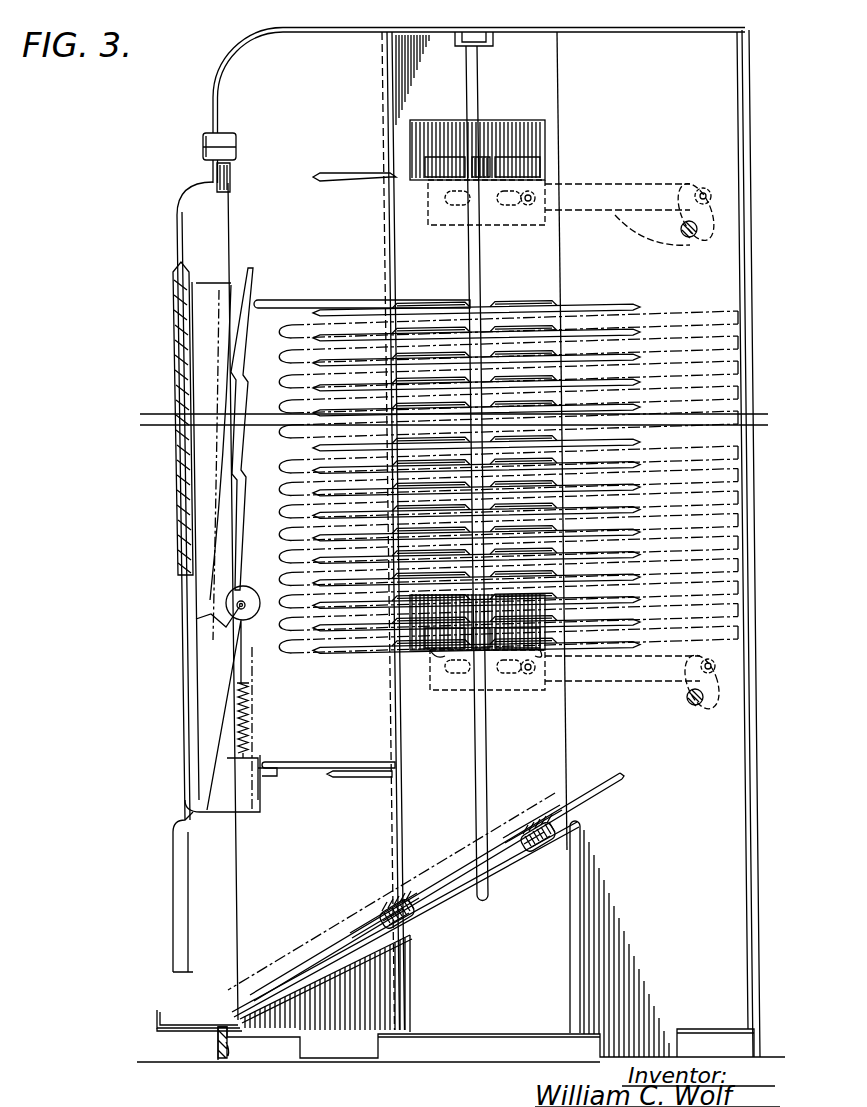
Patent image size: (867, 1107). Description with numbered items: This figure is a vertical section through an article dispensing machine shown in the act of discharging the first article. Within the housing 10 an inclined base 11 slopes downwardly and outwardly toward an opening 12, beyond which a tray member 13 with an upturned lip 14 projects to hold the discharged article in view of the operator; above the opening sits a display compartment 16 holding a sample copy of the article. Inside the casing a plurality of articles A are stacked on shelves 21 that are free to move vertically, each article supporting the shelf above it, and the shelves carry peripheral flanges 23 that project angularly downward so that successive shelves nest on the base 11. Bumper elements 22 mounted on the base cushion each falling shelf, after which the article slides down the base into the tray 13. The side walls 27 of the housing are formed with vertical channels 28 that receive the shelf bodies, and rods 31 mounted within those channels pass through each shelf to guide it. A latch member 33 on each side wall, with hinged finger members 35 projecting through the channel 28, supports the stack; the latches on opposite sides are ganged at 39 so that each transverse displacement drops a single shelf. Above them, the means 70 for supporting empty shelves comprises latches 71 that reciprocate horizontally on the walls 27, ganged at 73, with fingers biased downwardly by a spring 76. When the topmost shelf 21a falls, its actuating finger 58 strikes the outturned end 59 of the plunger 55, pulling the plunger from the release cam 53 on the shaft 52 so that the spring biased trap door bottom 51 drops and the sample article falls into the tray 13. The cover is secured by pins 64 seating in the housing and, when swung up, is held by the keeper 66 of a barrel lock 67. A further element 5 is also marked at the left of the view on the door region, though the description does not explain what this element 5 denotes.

The housing 10 is at (212, 90).
The barrel lock 67 is at (237, 150).
The keeper 66 is at (214, 200).
The door 5 is at (200, 320).
The display compartment 16 is at (205, 522).
The vertical channels 28 is at (390, 80).
The side walls 27 is at (655, 124).
The rods 31 is at (478, 268).
The latches 71 is at (446, 160).
The spring 76 is at (488, 160).
The means for supporting the empty shelves 70 is at (445, 226).
The ganging means 73 is at (689, 236).
The shelves 21 is at (585, 380).
The topmost shelf 21a is at (343, 310).
The peripheral flanges 23 is at (322, 658).
The articles A is at (284, 360).
The actuating finger 58 is at (292, 299).
The latch member 33 is at (445, 691).
The finger members 35 is at (437, 656).
The ganging means 39 is at (690, 680).
The bumper elements 22 is at (535, 822).
The inclined base 11 is at (328, 968).
The release cam 53 is at (258, 581).
The shaft 52 is at (250, 616).
The trap door bottom 51 is at (212, 620).
The plunger 55 is at (241, 656).
The outturned end 59 is at (272, 780).
The opening 12 is at (172, 973).
The upturned lip 14 is at (158, 1012).
The tray member 13 is at (160, 1032).
The pins 64 is at (230, 1042).